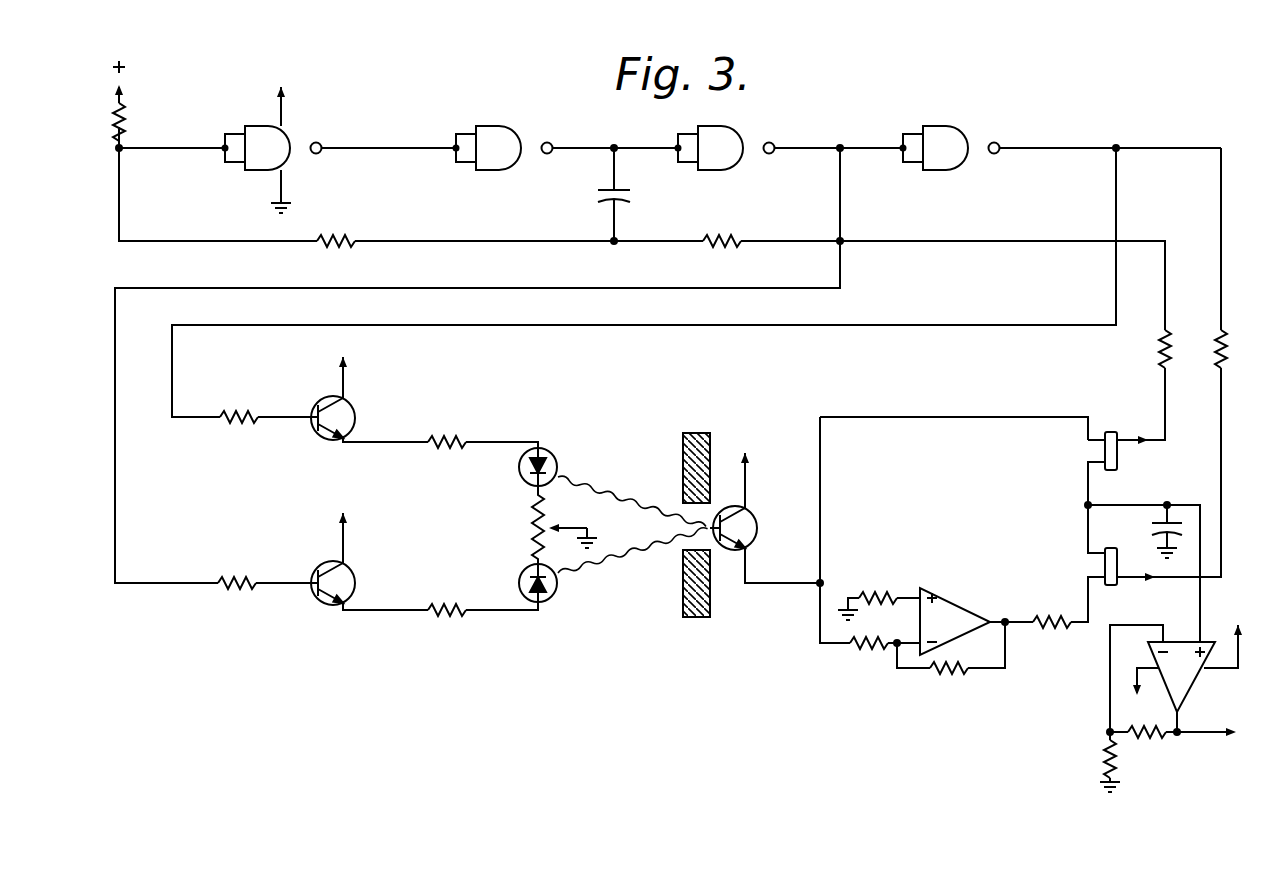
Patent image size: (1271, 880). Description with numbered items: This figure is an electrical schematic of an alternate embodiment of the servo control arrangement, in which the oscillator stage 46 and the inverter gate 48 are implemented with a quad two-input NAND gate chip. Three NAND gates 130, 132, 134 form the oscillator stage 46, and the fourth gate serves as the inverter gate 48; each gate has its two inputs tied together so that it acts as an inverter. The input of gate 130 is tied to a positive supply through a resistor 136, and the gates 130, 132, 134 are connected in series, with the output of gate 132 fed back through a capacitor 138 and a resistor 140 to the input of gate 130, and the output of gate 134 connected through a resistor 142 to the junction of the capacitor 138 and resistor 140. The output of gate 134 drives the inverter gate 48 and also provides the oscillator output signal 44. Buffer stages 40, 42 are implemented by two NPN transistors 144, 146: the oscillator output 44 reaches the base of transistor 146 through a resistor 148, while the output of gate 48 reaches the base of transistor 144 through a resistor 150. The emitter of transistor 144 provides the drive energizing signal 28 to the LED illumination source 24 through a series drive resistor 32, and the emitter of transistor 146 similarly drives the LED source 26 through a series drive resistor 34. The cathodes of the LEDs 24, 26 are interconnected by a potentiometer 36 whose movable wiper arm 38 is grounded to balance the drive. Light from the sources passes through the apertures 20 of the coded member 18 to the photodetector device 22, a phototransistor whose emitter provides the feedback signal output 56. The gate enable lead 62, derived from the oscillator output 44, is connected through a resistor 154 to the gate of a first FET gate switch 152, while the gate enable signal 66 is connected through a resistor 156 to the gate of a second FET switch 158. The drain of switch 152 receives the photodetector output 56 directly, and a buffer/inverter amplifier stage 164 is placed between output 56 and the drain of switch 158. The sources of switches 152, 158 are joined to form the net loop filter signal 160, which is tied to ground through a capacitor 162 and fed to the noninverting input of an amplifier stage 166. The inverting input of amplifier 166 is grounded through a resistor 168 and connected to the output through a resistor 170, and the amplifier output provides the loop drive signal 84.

The coded member 18 is at (683, 458).
The apertures 20 is at (683, 553).
The photodetector device 22 is at (722, 510).
The illumination source 24 is at (520, 475).
The illumination source 26 is at (520, 583).
The drive energizing signal 28 is at (378, 442).
The series drive resistor 32 is at (448, 435).
The series drive resistor 34 is at (445, 603).
The potentiometer 36 is at (535, 515).
The movable wiper arm 38 is at (565, 528).
The buffer stage 40 is at (358, 390).
The buffer stage 42 is at (318, 552).
The oscillator output signal 44 is at (842, 270).
The oscillator stage 46 is at (533, 104).
The inverter gate 48 is at (978, 128).
The feedback signal output 56 is at (790, 585).
The gate enable lead 62 is at (1166, 286).
The gate enable signal 66 is at (1223, 282).
The loop drive signal 84 is at (1212, 738).
The NAND gate 130 is at (310, 133).
The NAND gate 132 is at (540, 136).
The NAND gate 134 is at (745, 128).
The resistor 136 is at (123, 116).
The capacitor 138 is at (630, 192).
The resistor 140 is at (340, 236).
The resistor 142 is at (740, 236).
The NPN transistor 144 is at (312, 432).
The NPN transistor 146 is at (315, 570).
The resistor 148 is at (235, 612).
The resistor 150 is at (235, 410).
The FET gate switch 152 is at (1128, 404).
The resistor 154 is at (1160, 347).
The resistor 156 is at (1224, 346).
The FET switch gate 158 is at (1112, 590).
The net loop filter signal 160 is at (1125, 505).
The capacitor 162 is at (1170, 515).
The buffer/inverter amplifier stage 164 is at (952, 600).
The amplifier stage 166 is at (1195, 642).
The resistor 168 is at (1105, 758).
The resistor 170 is at (1138, 740).